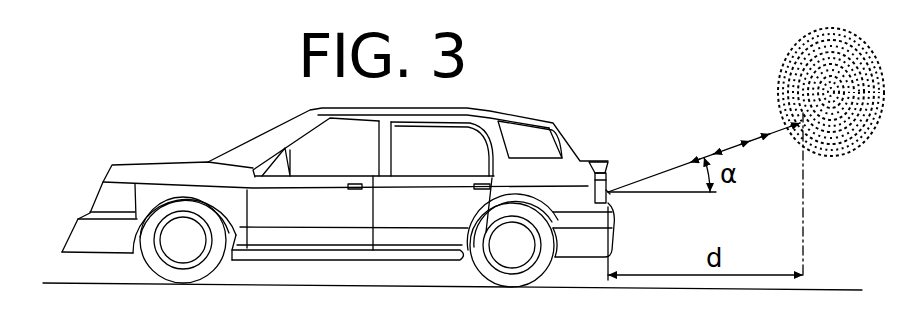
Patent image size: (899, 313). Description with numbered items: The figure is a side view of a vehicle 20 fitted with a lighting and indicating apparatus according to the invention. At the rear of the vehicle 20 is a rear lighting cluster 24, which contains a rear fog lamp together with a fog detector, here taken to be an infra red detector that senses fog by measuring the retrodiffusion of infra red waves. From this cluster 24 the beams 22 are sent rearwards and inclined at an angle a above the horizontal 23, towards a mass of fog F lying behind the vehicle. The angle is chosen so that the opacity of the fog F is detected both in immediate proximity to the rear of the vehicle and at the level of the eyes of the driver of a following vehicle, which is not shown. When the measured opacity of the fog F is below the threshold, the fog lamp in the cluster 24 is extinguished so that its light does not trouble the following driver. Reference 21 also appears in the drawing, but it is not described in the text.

The vehicle 20 is at (157, 162).
The rear lamp unit housing the sensor 21 is at (592, 163).
The beams 22 is at (727, 148).
The horizontal 23 is at (698, 194).
The rear lighting cluster 24 is at (611, 190).
The mass of fog F is at (802, 50).